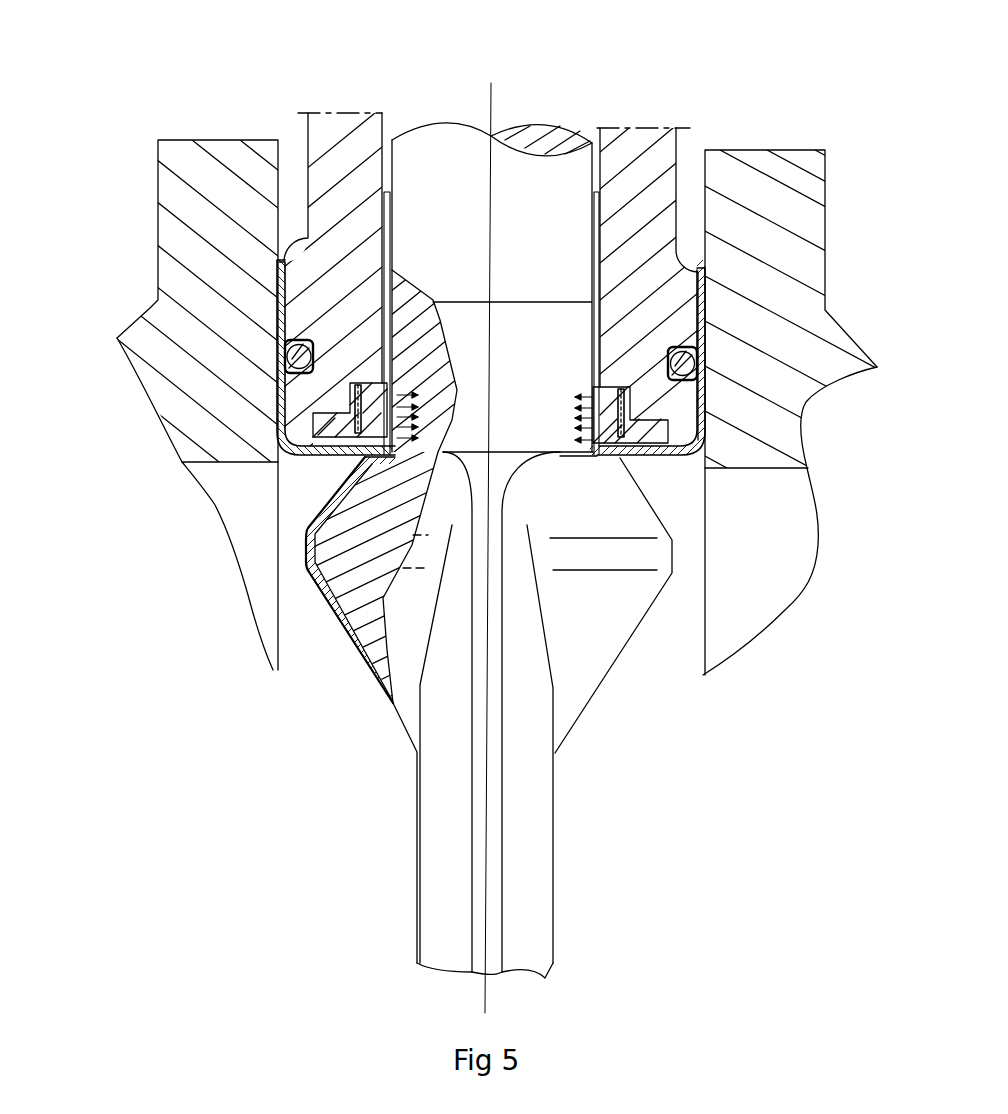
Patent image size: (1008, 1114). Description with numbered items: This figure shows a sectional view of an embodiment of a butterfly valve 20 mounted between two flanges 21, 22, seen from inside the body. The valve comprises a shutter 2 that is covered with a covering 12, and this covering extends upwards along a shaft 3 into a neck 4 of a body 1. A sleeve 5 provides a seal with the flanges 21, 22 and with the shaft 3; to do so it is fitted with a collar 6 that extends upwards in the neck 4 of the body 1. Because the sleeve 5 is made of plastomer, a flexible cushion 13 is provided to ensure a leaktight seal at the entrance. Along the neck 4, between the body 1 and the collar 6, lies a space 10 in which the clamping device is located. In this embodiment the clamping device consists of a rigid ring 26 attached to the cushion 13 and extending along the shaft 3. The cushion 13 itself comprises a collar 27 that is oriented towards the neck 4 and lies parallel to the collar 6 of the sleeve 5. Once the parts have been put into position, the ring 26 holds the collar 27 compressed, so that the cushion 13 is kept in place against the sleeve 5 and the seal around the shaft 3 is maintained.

The body 1 is at (653, 235).
The shutter 2 is at (442, 857).
The shaft 3 is at (523, 193).
The neck 4 is at (413, 123).
The sleeve 5 is at (297, 437).
The collar 6 is at (355, 448).
The space 10 is at (350, 392).
The covering 12 is at (367, 667).
The flexible cushion 13 is at (703, 468).
The butterfly valve 20 is at (637, 104).
The flange 21 is at (757, 175).
The flange 22 is at (233, 165).
The rigid ring 26 is at (322, 428).
The collar 27 is at (358, 397).